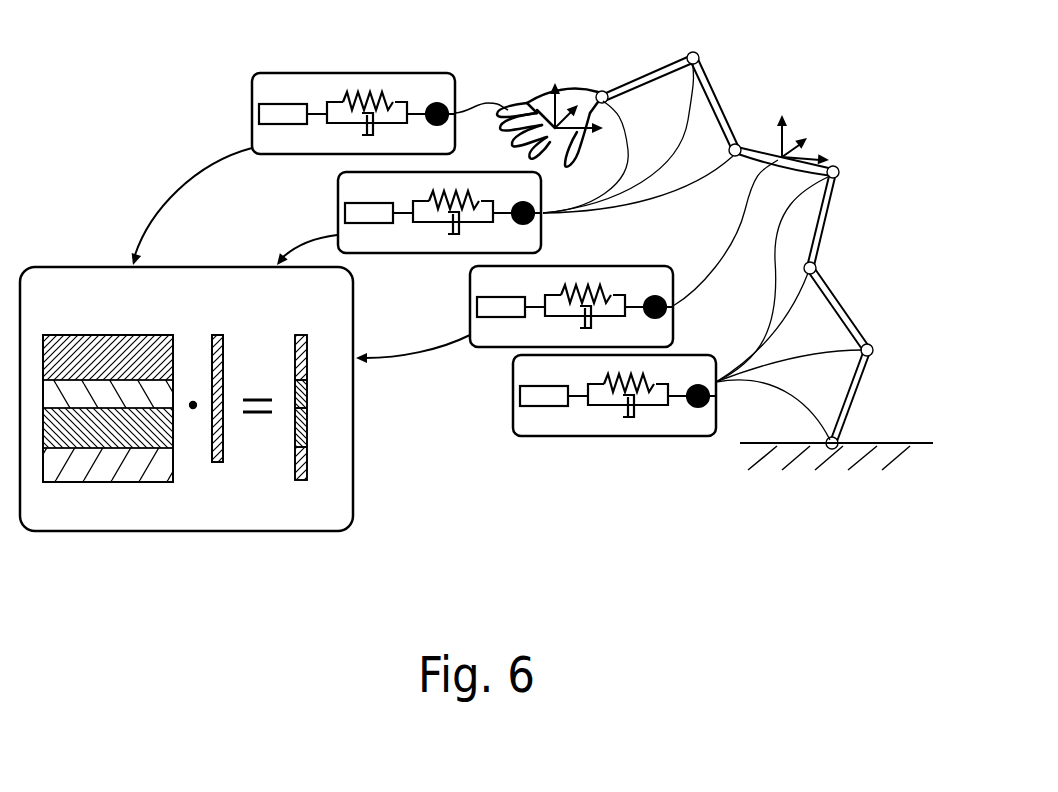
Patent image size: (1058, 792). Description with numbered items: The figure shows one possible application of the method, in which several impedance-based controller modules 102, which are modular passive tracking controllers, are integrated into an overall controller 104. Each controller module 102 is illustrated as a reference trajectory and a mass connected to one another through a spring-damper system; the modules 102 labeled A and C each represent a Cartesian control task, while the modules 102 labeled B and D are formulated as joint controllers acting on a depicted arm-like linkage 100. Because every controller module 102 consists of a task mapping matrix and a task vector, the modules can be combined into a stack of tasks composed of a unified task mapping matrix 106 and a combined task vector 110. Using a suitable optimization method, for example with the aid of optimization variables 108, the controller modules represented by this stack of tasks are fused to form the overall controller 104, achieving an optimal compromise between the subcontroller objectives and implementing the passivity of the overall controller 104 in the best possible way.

The kinematic skeleton model of arm 100 is at (717, 103).
The impedance-based controller module 102 is at (315, 100).
The overall controller 104 is at (80, 532).
The unified task mapping matrix 106 is at (163, 482).
The optimization variables 108 is at (218, 462).
The combined task vector 110 is at (301, 480).